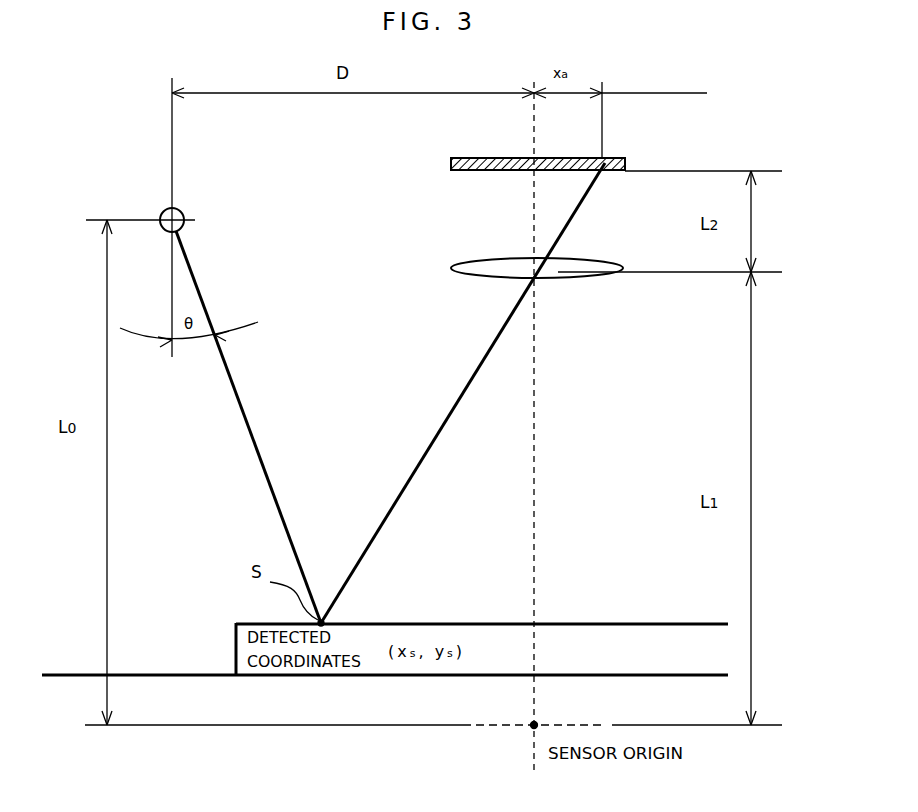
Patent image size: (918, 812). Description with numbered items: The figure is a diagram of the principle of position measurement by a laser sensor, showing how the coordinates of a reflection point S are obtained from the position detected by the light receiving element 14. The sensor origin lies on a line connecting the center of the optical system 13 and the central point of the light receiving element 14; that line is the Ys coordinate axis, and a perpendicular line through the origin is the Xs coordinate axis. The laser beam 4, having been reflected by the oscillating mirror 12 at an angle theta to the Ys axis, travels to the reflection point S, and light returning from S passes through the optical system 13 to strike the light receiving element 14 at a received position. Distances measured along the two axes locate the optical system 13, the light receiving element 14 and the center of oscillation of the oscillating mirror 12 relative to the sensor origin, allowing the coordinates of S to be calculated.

The oscillating mirror 12 is at (160, 212).
The optical system 13 is at (577, 274).
The light receiving element 14 is at (622, 158).
The laser beam 4 is at (438, 433).